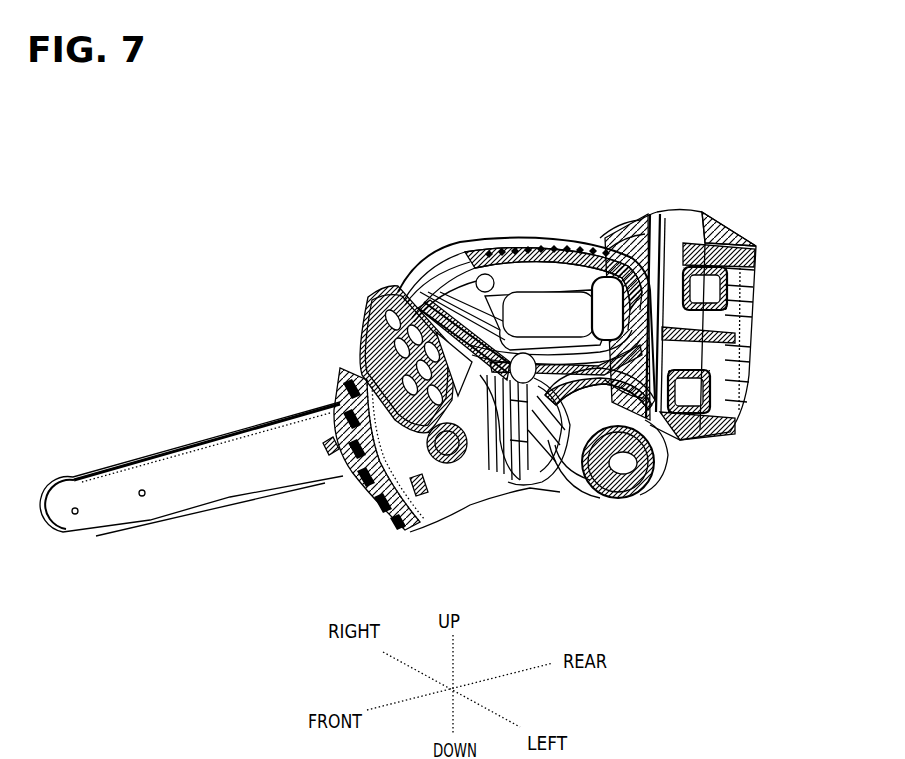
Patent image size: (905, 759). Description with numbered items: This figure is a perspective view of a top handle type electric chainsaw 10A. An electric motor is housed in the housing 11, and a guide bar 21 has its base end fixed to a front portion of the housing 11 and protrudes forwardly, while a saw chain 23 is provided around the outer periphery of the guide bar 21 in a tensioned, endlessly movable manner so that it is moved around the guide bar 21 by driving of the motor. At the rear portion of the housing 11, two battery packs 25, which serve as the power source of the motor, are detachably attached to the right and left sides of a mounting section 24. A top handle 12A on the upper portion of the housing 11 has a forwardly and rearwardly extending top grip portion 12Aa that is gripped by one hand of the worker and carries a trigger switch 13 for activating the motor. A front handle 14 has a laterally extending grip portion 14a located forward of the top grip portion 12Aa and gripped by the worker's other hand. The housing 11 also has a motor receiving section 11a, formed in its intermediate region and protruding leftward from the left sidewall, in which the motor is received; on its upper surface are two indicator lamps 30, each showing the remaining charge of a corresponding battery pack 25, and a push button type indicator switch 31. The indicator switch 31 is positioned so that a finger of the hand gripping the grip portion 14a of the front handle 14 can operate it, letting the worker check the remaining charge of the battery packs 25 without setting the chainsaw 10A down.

The top handle type electric chainsaw 10A is at (477, 216).
The housing 11 is at (463, 492).
The motor receiving section 11a is at (653, 477).
The top handle 12A is at (470, 253).
The top grip portion 12Aa is at (530, 243).
The trigger switch 13 is at (425, 278).
The front handle 14 is at (560, 510).
The grip portion 14a is at (513, 490).
The guide bar 21 is at (198, 455).
The saw chain 23 is at (210, 508).
The mounting section 24 is at (650, 218).
The battery packs 25 is at (762, 273).
The indicator lamps 30 is at (627, 500).
The indicator switch 31 is at (602, 497).